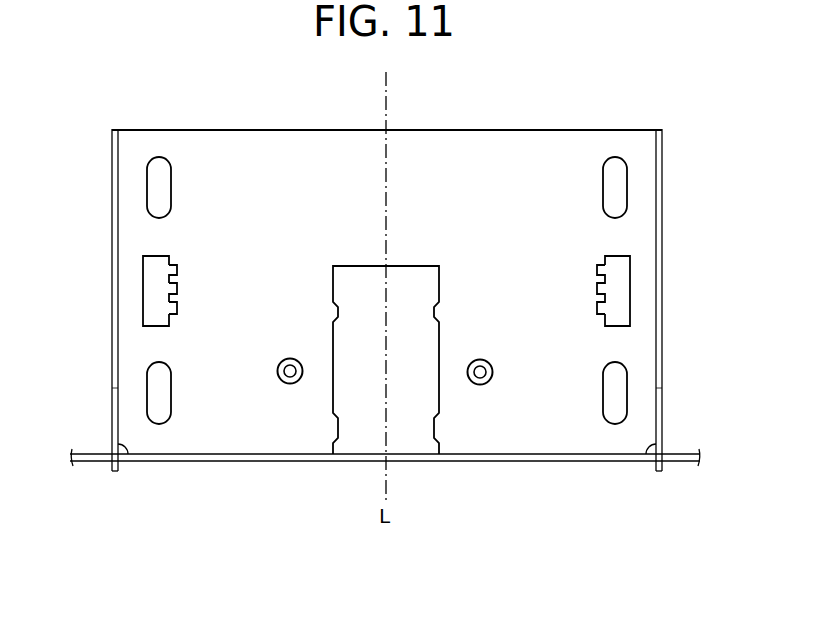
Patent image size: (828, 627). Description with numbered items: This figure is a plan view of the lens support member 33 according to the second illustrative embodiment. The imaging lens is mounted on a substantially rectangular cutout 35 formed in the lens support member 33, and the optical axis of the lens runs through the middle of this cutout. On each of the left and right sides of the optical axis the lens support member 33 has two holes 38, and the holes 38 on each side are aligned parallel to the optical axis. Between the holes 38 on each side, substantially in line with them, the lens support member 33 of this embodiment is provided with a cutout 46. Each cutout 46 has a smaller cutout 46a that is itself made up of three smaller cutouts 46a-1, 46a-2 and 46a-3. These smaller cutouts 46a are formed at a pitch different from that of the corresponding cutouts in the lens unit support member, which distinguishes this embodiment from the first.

The lens support member 33 is at (497, 140).
The substantially rectangular cutout 35 is at (415, 442).
The holes 38 is at (162, 188).
The cutouts 46 is at (150, 289).
The smaller cutout 46a is at (387, 272).
The smaller cutout 46a-1 is at (178, 268).
The smaller cutout 46a-2 is at (178, 290).
The smaller cutout 46a-3 is at (178, 308).